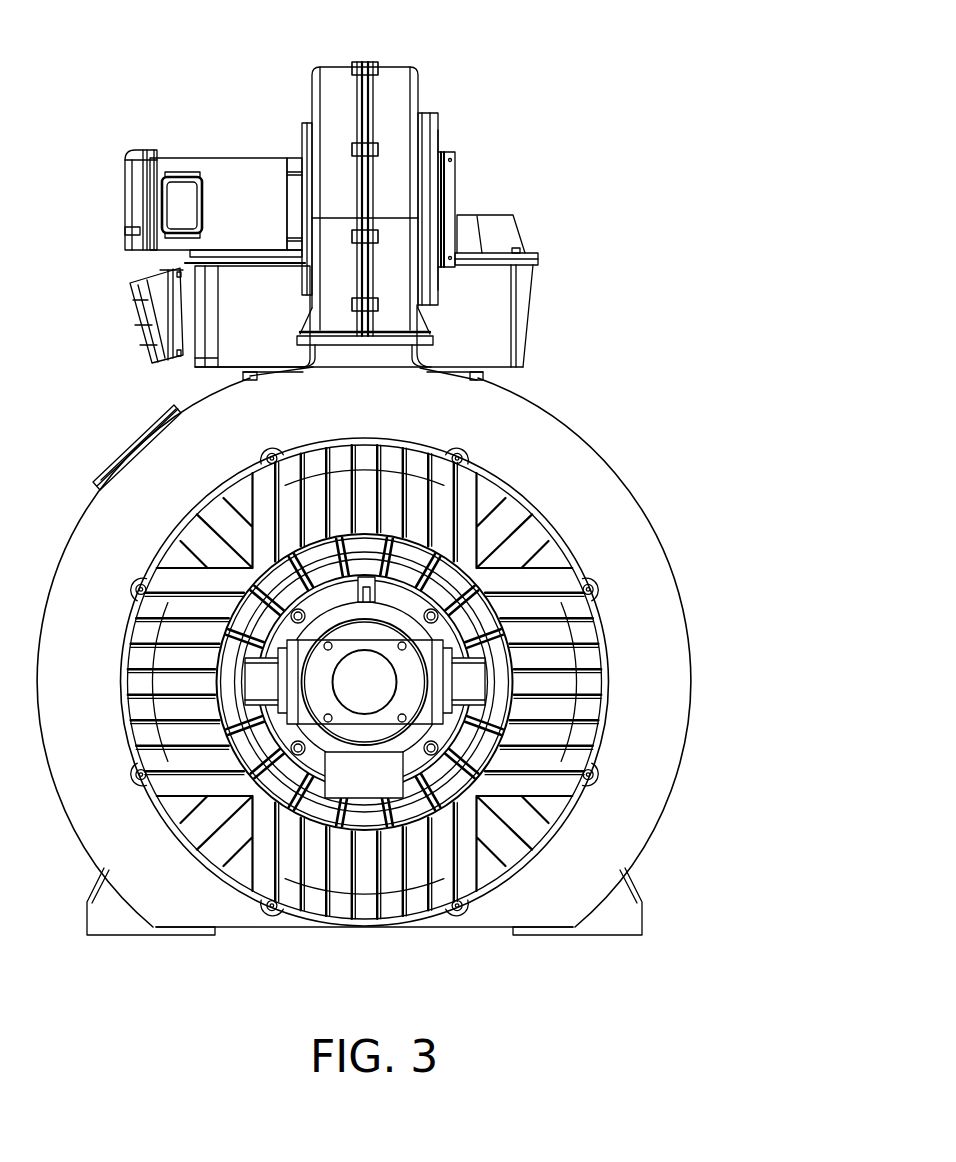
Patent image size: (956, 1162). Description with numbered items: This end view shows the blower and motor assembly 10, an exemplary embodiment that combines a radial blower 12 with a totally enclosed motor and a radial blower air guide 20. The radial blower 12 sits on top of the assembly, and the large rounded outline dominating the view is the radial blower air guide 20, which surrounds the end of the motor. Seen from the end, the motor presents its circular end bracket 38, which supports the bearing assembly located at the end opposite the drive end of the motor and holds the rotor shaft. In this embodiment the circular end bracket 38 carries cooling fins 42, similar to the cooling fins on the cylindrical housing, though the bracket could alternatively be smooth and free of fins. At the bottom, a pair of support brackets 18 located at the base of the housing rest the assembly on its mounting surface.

The blower and motor assembly 10 is at (548, 72).
The radial blower 12 is at (398, 58).
The support brackets 18 is at (120, 938).
The radial blower air guide 20 is at (577, 438).
The circular end bracket 38 is at (340, 870).
The cooling fins 42 is at (380, 897).